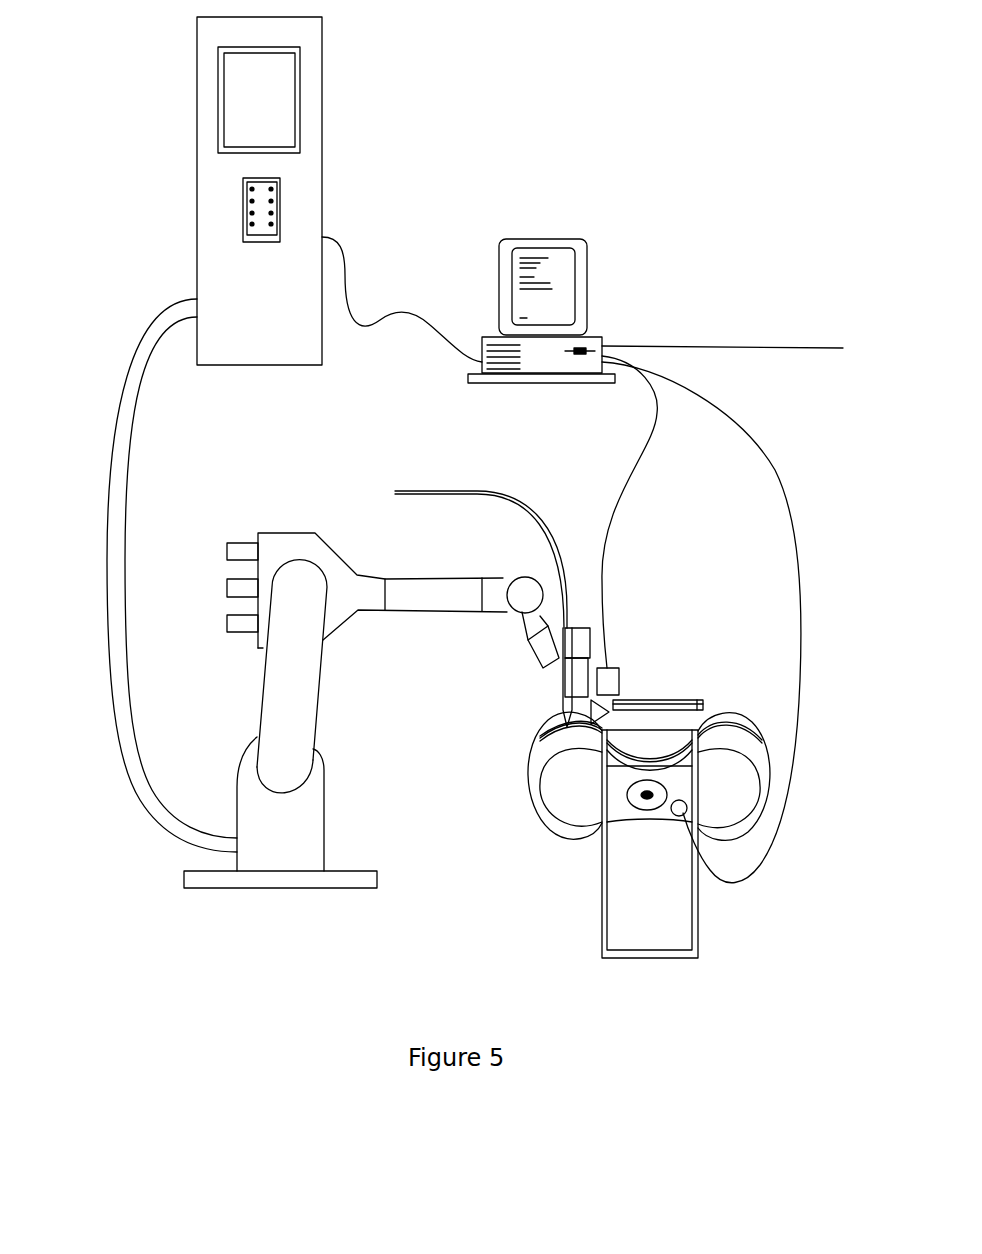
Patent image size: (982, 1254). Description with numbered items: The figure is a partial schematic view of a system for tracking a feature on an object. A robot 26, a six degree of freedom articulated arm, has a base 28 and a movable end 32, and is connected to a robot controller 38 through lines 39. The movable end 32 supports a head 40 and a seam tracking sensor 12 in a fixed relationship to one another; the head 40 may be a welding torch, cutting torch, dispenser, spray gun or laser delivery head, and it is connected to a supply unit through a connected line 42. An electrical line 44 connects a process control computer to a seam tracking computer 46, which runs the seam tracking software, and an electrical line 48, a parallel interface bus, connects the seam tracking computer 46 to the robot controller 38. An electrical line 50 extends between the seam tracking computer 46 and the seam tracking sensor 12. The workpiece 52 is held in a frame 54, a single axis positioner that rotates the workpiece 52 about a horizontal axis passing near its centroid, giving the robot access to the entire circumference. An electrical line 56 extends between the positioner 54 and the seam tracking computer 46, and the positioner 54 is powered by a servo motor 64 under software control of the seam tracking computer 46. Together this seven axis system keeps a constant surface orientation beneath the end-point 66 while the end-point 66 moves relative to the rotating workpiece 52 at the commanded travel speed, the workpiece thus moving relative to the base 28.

The seam tracking sensor 12 is at (618, 683).
The robot 26 is at (294, 528).
The base 28 is at (297, 858).
The movable end 32 is at (540, 650).
The robot controller 38 is at (302, 180).
The lines 39 is at (115, 640).
The head 40 is at (567, 688).
The connected line 42 is at (447, 491).
The electrical line 44 is at (685, 345).
The seam tracking computer 46 is at (582, 300).
The electrical line 48 is at (430, 325).
The electrical line 50 is at (636, 490).
The workpiece 52 is at (725, 723).
The frame 54 is at (687, 887).
The electrical line 56 is at (792, 513).
The servo motor 64 is at (648, 808).
The end-point 66 is at (553, 730).